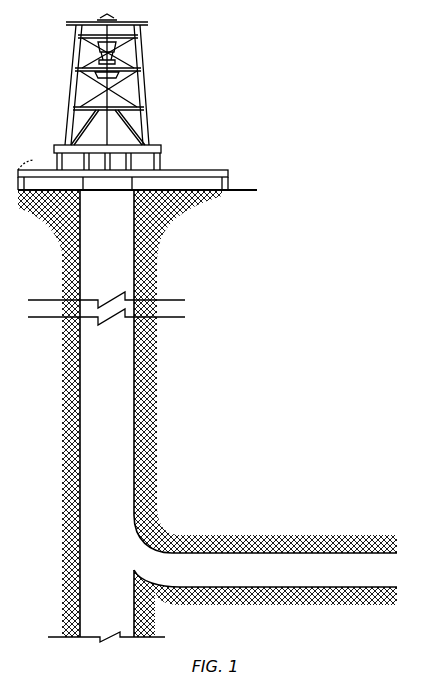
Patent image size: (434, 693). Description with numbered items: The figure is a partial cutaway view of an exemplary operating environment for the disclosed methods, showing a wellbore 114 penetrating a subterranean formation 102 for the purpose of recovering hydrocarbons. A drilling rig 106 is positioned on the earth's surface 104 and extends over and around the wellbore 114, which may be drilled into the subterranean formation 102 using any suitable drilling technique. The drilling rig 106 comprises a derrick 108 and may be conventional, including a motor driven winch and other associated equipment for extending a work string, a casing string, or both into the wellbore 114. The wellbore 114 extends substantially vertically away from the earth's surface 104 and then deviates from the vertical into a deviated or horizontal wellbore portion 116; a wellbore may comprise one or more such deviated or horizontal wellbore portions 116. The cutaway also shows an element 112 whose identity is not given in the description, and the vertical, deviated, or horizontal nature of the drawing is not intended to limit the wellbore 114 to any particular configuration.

The subterranean formation 102 is at (165, 212).
The earth's surface 104 is at (240, 190).
The drilling rig 106 is at (180, 68).
The derrick 108 is at (67, 51).
The casing 112 is at (100, 400).
The wellbore 114 is at (98, 242).
The deviated or horizontal wellbore portion 116 is at (281, 565).